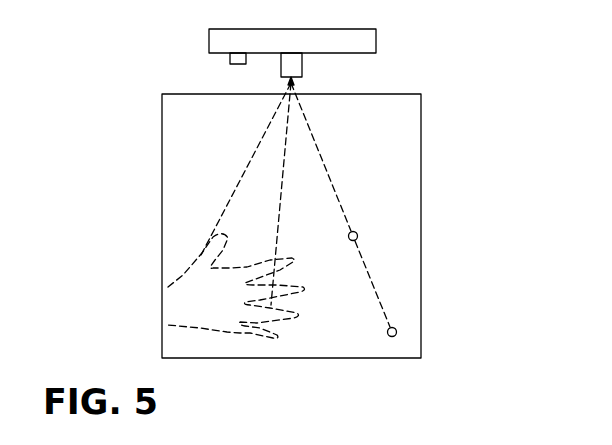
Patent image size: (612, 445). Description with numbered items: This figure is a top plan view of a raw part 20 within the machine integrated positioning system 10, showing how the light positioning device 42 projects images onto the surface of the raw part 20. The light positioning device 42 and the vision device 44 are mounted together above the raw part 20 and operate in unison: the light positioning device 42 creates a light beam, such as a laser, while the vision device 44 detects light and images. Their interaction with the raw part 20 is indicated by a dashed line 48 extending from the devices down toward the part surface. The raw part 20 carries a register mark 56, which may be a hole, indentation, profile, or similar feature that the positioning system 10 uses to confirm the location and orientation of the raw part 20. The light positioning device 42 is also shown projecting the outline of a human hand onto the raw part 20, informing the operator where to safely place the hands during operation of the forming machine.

The machine integrated positioning system 10 is at (430, 57).
The raw part 20 is at (421, 133).
The light positioning device 42 is at (302, 63).
The vision device 44 is at (230, 60).
The dashed line 48 is at (357, 232).
The register mark 56 is at (397, 332).